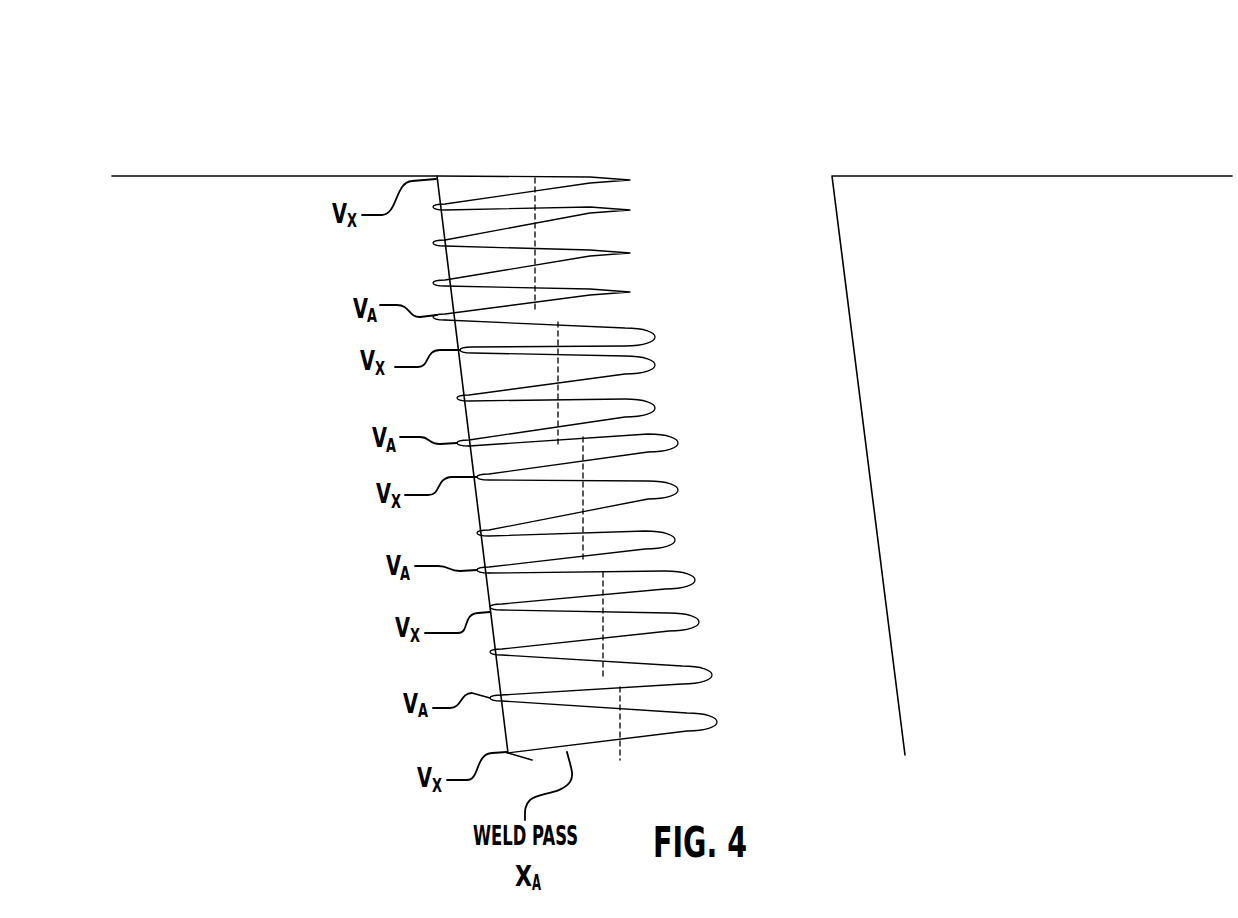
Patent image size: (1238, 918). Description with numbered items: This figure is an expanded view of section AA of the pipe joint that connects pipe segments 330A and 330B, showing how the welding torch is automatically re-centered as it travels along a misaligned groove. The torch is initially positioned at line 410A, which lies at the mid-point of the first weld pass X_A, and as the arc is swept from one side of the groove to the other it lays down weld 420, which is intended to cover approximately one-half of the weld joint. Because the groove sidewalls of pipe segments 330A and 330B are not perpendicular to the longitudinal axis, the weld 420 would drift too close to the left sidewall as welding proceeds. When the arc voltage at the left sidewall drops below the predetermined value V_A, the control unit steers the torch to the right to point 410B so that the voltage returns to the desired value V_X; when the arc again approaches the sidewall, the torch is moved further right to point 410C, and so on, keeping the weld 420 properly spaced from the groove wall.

The pipe segment 330A is at (272, 643).
The pipe segment 330B is at (1077, 658).
The line 410A is at (535, 172).
The point 410B is at (558, 322).
The point 410C is at (583, 440).
The weld 420 is at (682, 736).
The section AA is at (872, 88).